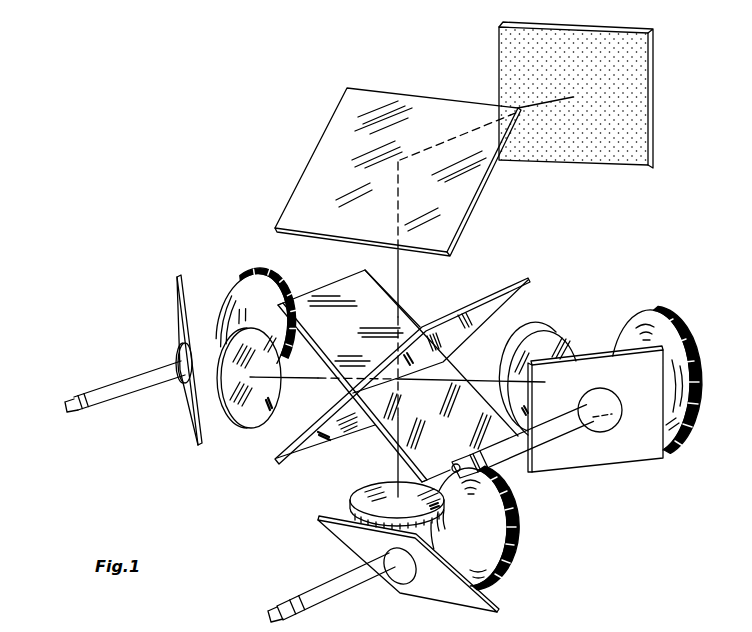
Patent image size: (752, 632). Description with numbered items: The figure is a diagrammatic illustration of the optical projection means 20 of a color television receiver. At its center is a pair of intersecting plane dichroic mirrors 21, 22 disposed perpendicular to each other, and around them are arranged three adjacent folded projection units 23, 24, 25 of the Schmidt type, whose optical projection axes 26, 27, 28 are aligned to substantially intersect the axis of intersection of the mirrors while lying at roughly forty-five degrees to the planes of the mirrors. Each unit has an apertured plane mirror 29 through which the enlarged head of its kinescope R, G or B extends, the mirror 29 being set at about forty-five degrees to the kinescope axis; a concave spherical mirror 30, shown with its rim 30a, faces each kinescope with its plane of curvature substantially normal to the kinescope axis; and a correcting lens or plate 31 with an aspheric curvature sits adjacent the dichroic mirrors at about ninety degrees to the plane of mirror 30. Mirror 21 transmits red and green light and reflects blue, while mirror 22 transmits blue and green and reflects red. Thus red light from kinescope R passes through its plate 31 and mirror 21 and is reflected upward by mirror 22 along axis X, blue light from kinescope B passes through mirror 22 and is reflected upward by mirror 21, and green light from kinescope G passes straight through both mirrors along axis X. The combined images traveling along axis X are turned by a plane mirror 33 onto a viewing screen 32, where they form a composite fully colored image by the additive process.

The multiple image projection means 20 is at (208, 479).
The plane dichroic mirror 21 is at (347, 288).
The plane dichroic mirror 22 is at (500, 308).
The folded projection unit 23 is at (207, 292).
The folded projection unit 24 is at (498, 590).
The folded projection unit 25 is at (590, 342).
The optical projection axis 26 is at (302, 380).
The optical projection axis 27 is at (394, 461).
The optical projection axis 28 is at (478, 379).
The apertured plane mirror 29 is at (178, 326).
The concave spherical mirror 30 is at (271, 282).
The lens rim 30a is at (238, 287).
The correcting lens or plate 31 is at (256, 422).
The viewing screen 32 is at (636, 129).
The plane mirror 33 is at (467, 190).
The axis X is at (400, 278).
The kinescope R is at (64, 407).
The kinescope G is at (270, 616).
The kinescope B is at (513, 457).